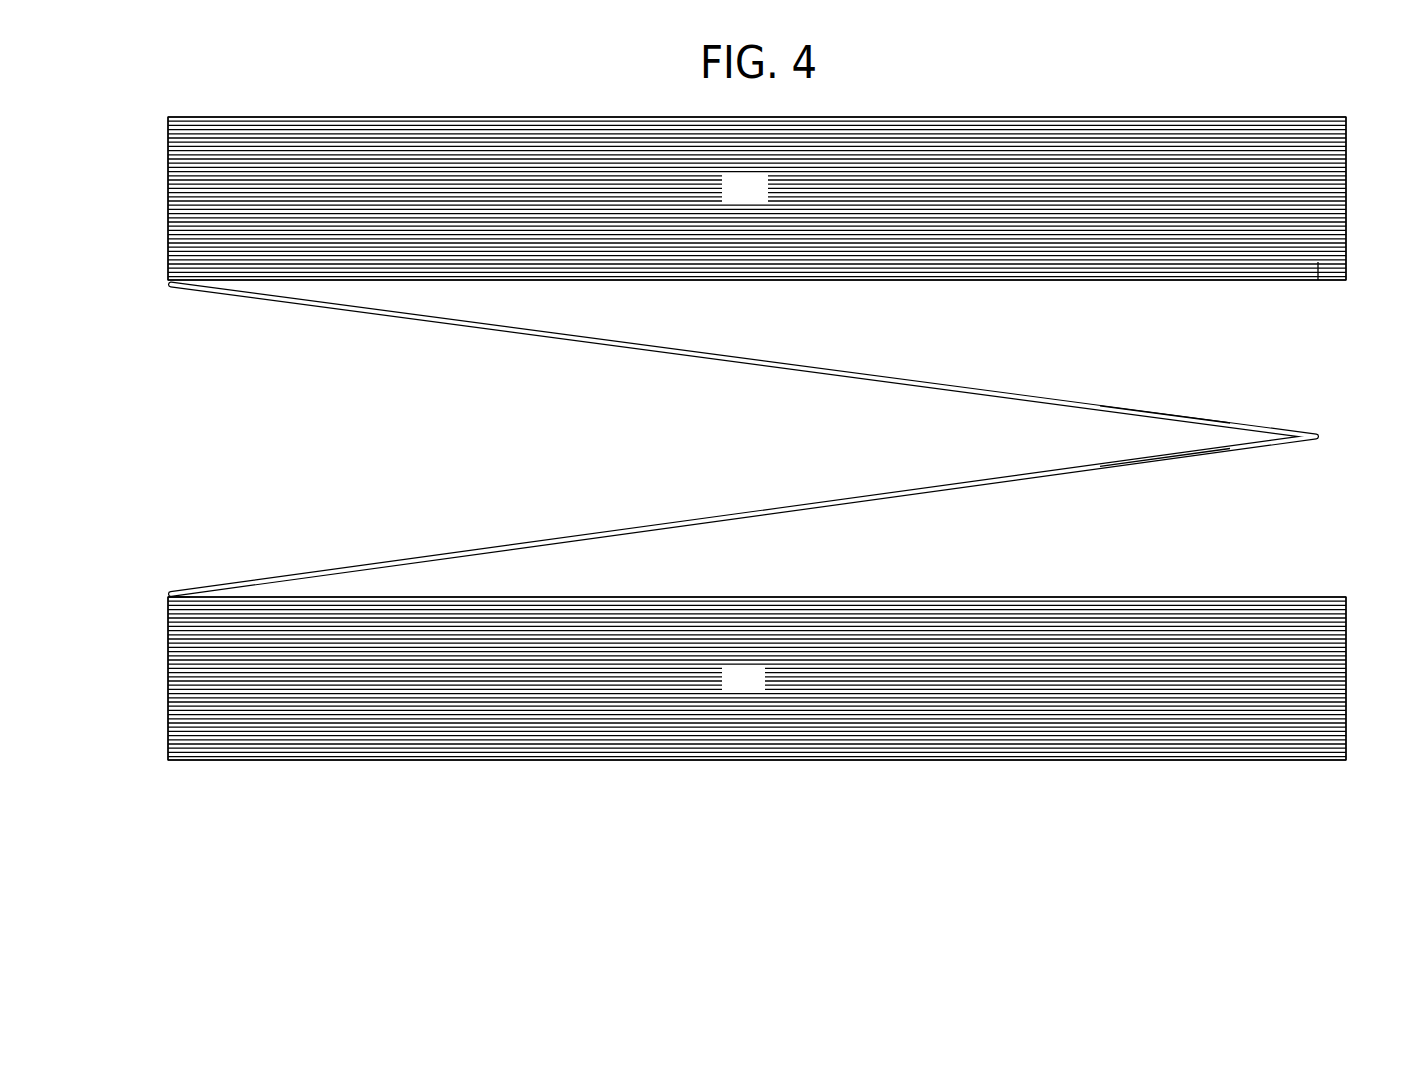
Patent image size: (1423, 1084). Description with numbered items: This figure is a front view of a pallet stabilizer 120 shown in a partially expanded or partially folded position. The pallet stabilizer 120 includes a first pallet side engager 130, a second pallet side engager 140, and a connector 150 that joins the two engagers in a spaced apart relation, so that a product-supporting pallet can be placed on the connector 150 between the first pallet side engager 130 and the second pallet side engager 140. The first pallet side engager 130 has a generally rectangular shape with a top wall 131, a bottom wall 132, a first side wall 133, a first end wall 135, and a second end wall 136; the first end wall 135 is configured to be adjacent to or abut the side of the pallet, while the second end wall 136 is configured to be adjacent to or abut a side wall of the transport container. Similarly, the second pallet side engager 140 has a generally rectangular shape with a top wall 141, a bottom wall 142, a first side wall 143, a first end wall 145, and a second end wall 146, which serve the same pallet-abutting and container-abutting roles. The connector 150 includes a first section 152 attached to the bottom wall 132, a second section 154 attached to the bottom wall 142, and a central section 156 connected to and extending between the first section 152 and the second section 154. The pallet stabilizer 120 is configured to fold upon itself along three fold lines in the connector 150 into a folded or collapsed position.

The pallet stabilizer 120 is at (443, 781).
The first pallet side engager 130 is at (1349, 627).
The top wall 131 is at (1034, 762).
The bottom wall 132 is at (187, 600).
The first side wall 133 is at (763, 689).
The first end wall 135 is at (168, 709).
The second end wall 136 is at (1348, 698).
The second pallet side engager 140 is at (1348, 141).
The top wall 141 is at (948, 117).
The bottom wall 142 is at (1319, 274).
The first side wall 143 is at (765, 197).
The first end wall 145 is at (168, 183).
The second end wall 146 is at (1348, 212).
The connector 150 is at (1319, 431).
The first section 152 is at (990, 597).
The second section 154 is at (1074, 282).
The central section 156 is at (1166, 408).